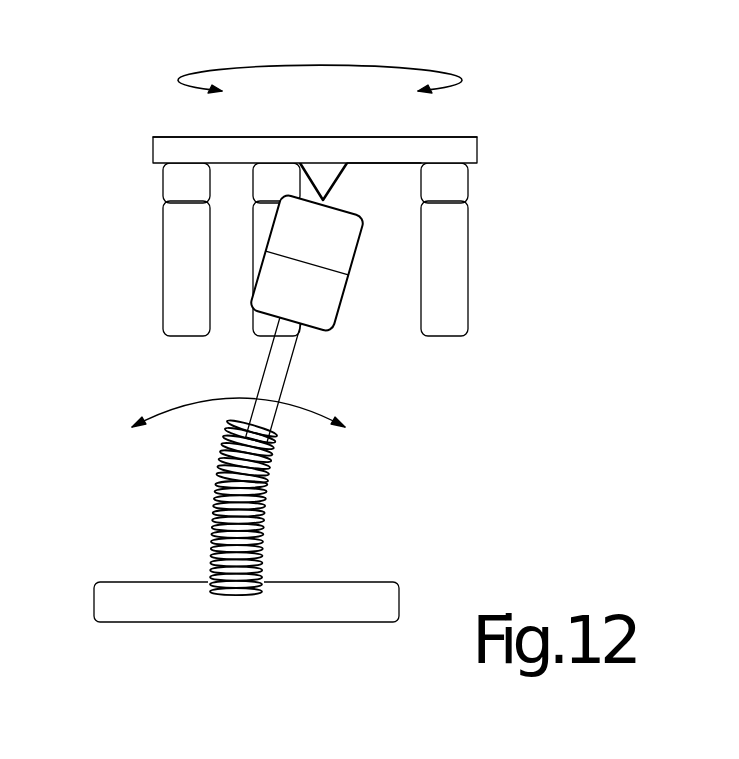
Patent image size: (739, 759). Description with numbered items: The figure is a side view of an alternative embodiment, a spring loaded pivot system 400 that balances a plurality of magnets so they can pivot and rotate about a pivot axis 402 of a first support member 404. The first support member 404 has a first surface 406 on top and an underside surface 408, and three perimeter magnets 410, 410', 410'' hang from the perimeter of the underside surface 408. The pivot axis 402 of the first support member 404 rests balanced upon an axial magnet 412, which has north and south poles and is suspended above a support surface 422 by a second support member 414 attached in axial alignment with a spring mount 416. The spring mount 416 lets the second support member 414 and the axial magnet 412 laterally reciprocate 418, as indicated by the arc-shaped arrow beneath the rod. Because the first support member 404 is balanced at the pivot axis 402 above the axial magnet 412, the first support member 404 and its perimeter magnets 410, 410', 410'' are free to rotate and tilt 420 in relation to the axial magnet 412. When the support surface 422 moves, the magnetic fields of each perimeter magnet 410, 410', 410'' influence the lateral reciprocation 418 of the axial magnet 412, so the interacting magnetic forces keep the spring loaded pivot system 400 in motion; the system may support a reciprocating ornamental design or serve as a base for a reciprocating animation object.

The spring loaded pivot system 400 is at (93, 155).
The pivot axis 402 is at (323, 178).
The first support member 404 is at (262, 148).
The first surface 406 is at (385, 137).
The underside surface 408 is at (377, 165).
The perimeter magnet 410 is at (487, 249).
The perimeter magnet 410' is at (149, 249).
The perimeter magnet 410'' is at (194, 249).
The axial magnet 412 is at (340, 253).
The second support member 414 is at (268, 382).
The spring mount 416 is at (263, 508).
The lateral reciprocation 418 is at (307, 408).
The rotate and tilt motion 420 is at (405, 67).
The support surface 422 is at (322, 602).